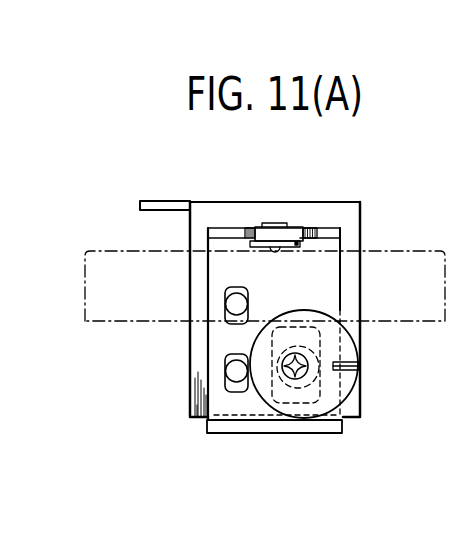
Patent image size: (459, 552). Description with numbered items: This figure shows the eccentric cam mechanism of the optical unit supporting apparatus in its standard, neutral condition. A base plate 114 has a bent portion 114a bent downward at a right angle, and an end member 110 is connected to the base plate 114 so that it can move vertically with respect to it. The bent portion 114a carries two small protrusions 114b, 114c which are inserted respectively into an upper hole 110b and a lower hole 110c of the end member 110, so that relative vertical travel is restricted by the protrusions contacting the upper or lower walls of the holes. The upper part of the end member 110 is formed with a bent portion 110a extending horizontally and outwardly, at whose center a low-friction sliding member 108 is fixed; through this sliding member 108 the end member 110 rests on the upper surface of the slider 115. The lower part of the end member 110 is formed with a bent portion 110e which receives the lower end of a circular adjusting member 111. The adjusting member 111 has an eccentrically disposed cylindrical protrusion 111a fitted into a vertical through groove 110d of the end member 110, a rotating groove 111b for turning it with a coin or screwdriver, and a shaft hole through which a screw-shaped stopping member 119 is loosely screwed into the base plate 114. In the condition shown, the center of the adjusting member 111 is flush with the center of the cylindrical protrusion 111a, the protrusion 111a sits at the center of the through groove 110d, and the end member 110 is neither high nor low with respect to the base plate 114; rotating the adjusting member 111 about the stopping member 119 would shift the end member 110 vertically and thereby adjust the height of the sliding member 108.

The sliding member 108 is at (273, 246).
The end member 110 is at (320, 286).
The bent portion 110a is at (318, 232).
The hole 110b is at (223, 290).
The hole 110c is at (206, 405).
The longitudinal through groove 110d is at (279, 404).
The bent portion 110e is at (332, 433).
The adjusting member 111 is at (352, 390).
The cylindrical protrusion 111a is at (270, 372).
The rotating groove 111b is at (358, 363).
The base plate 114 is at (350, 202).
The bent portion 114a is at (197, 237).
The small protrusion 114b is at (237, 304).
The small protrusion 114c is at (237, 373).
The slider 115 is at (110, 250).
The stopping member 119 is at (296, 372).